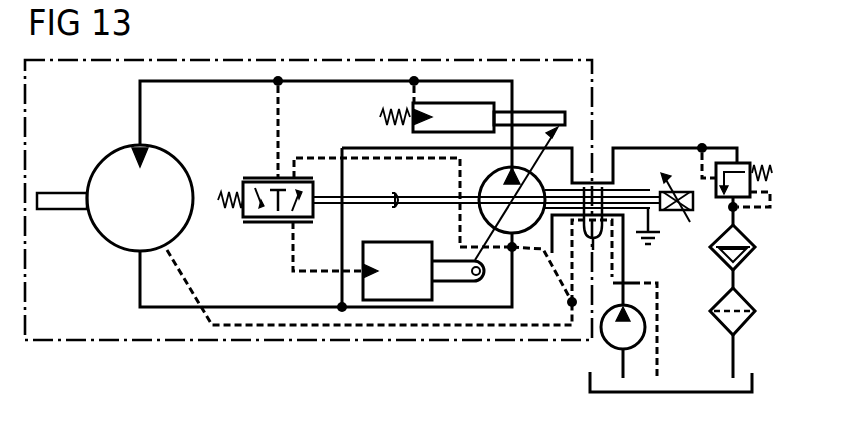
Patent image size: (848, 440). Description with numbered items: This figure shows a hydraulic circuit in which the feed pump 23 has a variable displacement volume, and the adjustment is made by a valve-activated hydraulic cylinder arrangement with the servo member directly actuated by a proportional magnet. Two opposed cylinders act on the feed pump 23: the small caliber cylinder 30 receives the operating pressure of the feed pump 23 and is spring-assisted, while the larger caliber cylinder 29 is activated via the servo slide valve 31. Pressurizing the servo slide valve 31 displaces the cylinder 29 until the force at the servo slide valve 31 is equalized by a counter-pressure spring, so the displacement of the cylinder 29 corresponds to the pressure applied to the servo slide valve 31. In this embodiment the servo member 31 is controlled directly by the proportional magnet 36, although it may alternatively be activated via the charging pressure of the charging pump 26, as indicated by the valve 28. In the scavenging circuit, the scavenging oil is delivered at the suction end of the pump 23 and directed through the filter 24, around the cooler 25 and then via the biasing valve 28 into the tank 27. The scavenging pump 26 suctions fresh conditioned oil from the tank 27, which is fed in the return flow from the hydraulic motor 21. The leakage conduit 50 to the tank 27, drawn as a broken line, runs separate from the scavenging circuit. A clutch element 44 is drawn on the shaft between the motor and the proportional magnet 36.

The hydraulic motor 21 is at (111, 153).
The servo slide valve 31 is at (258, 178).
The small caliber cylinder 30 is at (478, 103).
The clutch 44 is at (592, 176).
The feed pump 23 is at (522, 240).
The larger caliber cylinder 29 is at (392, 242).
The proportional magnet 36 is at (694, 213).
The biasing valve 28 is at (745, 162).
The cooler 25 is at (752, 232).
The filter 24 is at (756, 300).
The tank 27 is at (756, 384).
The scavenging pump 26 is at (605, 345).
The leakage conduit 50 is at (657, 363).